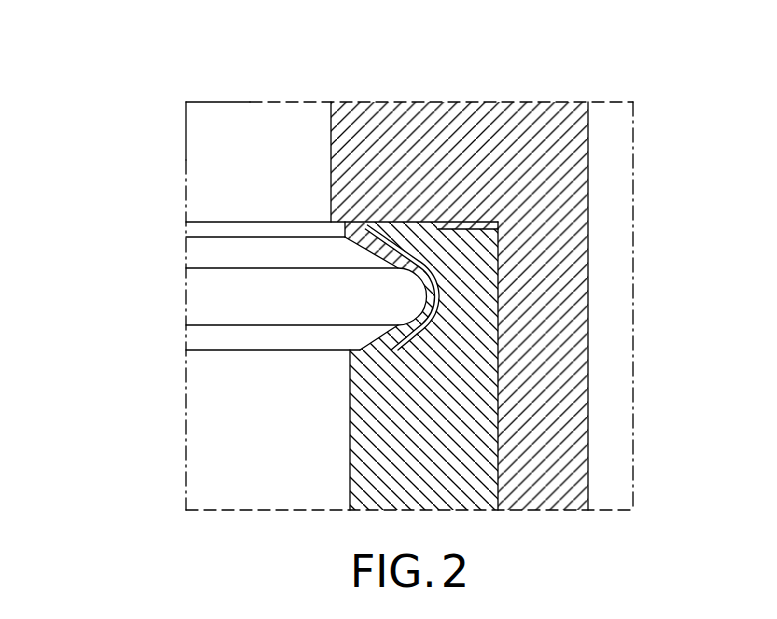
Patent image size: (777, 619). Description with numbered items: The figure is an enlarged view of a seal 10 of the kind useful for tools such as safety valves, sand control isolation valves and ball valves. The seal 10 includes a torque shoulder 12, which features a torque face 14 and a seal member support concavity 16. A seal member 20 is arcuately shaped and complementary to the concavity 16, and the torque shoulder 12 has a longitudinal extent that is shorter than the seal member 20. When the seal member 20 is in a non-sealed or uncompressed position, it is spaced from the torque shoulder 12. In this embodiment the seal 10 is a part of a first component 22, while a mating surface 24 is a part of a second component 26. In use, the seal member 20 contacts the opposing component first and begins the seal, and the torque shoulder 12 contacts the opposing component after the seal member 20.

The seal 10 is at (124, 134).
The torque shoulder 12 is at (472, 258).
The torque face 14 is at (433, 222).
The seal member support concavity 16 is at (437, 290).
The seal member 20 is at (380, 248).
The first component 22 is at (215, 462).
The mating surface 24 is at (480, 238).
The second component 26 is at (576, 430).